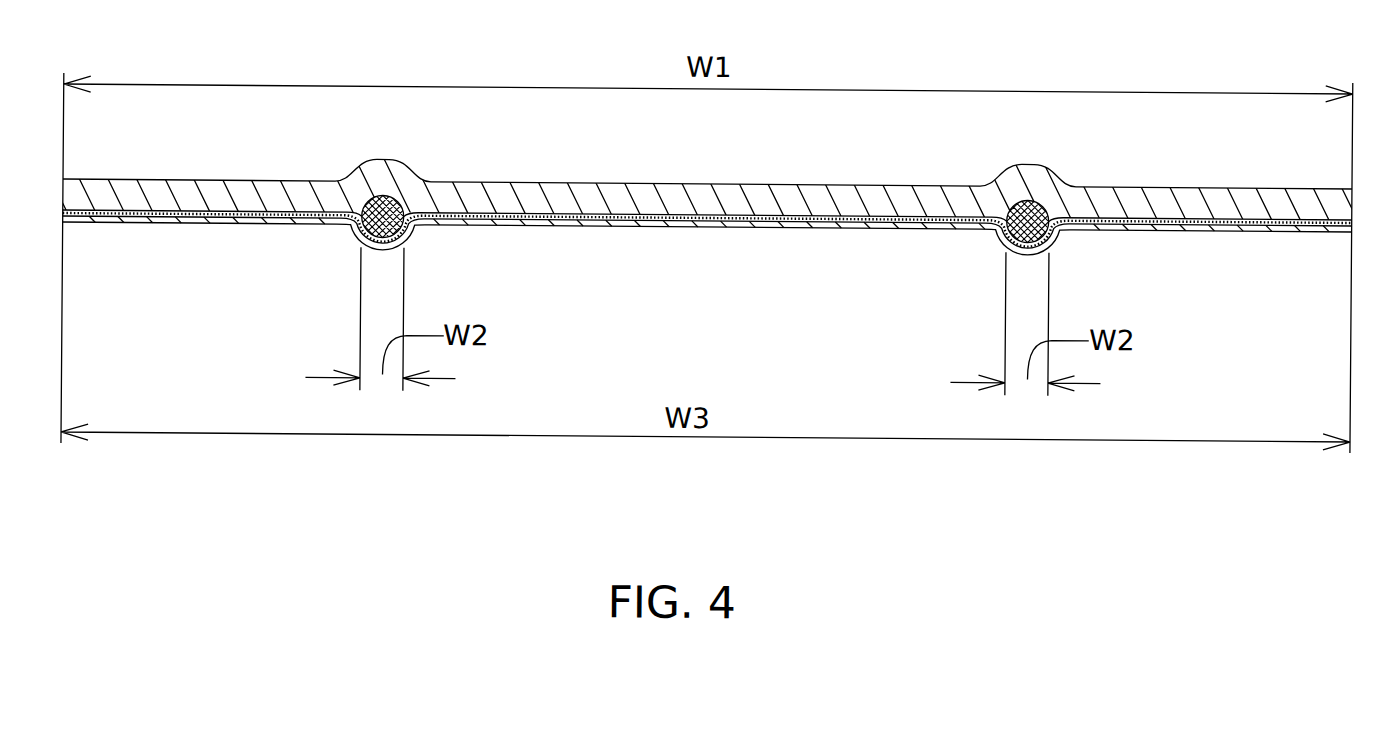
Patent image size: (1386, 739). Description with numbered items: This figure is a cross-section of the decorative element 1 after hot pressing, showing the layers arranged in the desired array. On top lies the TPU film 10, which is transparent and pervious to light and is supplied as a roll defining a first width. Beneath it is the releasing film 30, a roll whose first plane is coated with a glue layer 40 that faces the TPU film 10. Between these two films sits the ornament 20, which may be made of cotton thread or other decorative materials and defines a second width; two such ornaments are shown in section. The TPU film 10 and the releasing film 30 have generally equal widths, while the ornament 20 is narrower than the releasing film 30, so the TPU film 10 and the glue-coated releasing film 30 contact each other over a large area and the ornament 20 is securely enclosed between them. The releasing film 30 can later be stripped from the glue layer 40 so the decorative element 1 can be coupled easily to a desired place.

The decorative element 1 is at (854, 101).
The TPU film 10 is at (660, 198).
The ornament 20 is at (384, 194).
The releasing film 30 is at (329, 222).
The glue layer 40 is at (520, 213).